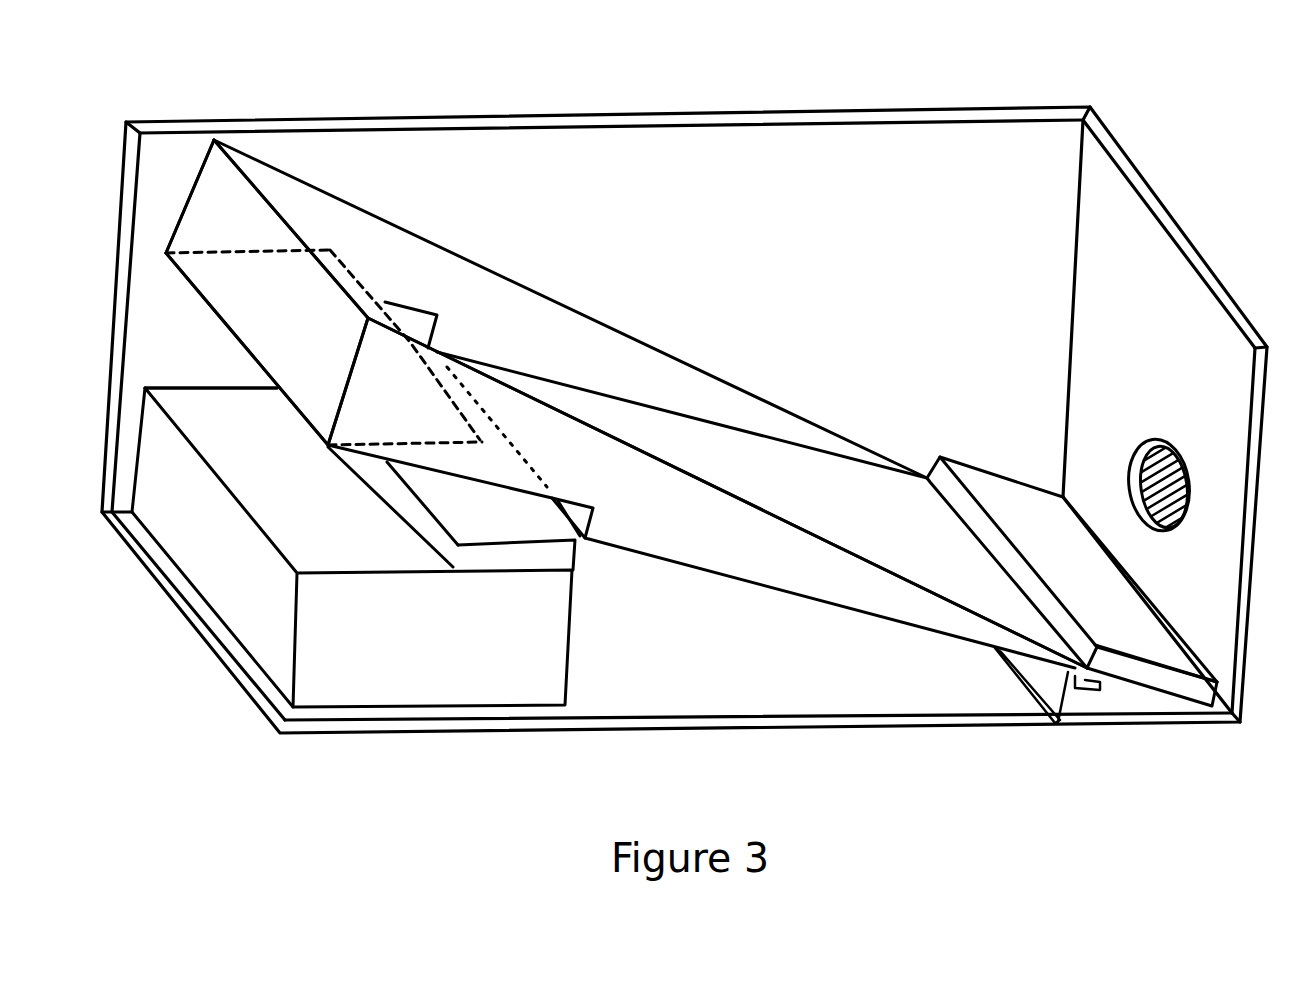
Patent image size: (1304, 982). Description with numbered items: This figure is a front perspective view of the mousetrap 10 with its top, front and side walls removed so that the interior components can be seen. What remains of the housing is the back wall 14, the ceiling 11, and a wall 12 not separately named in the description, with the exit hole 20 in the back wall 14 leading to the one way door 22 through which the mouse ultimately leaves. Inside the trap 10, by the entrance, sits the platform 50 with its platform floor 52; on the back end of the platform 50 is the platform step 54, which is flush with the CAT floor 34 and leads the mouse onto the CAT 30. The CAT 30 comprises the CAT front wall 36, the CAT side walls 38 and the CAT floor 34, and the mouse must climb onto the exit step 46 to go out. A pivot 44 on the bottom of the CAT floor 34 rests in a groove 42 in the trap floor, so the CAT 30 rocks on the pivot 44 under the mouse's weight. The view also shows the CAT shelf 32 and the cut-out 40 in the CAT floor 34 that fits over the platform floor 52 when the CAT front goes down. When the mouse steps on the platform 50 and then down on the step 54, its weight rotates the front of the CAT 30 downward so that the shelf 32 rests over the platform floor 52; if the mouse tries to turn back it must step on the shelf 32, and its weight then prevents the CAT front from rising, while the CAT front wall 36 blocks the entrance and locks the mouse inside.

The mousetrap 10 is at (167, 79).
The ceiling 11 is at (622, 113).
The rear wall 12 is at (777, 150).
The back wall 14 is at (1128, 218).
The exit hole 20 is at (1157, 440).
The one way door 22 is at (1188, 498).
The CAT 30 is at (462, 250).
The CAT shelf 32 is at (237, 318).
The CAT floor 34 is at (832, 470).
The CAT front wall 36 is at (203, 198).
The CAT side walls 38 is at (598, 340).
The cut-out 40 is at (520, 470).
The groove 42 is at (1060, 707).
The pivot 44 is at (1042, 695).
The exit step 46 is at (1173, 652).
The platform 50 is at (383, 683).
The platform floor 52 is at (200, 408).
The platform step 54 is at (408, 498).